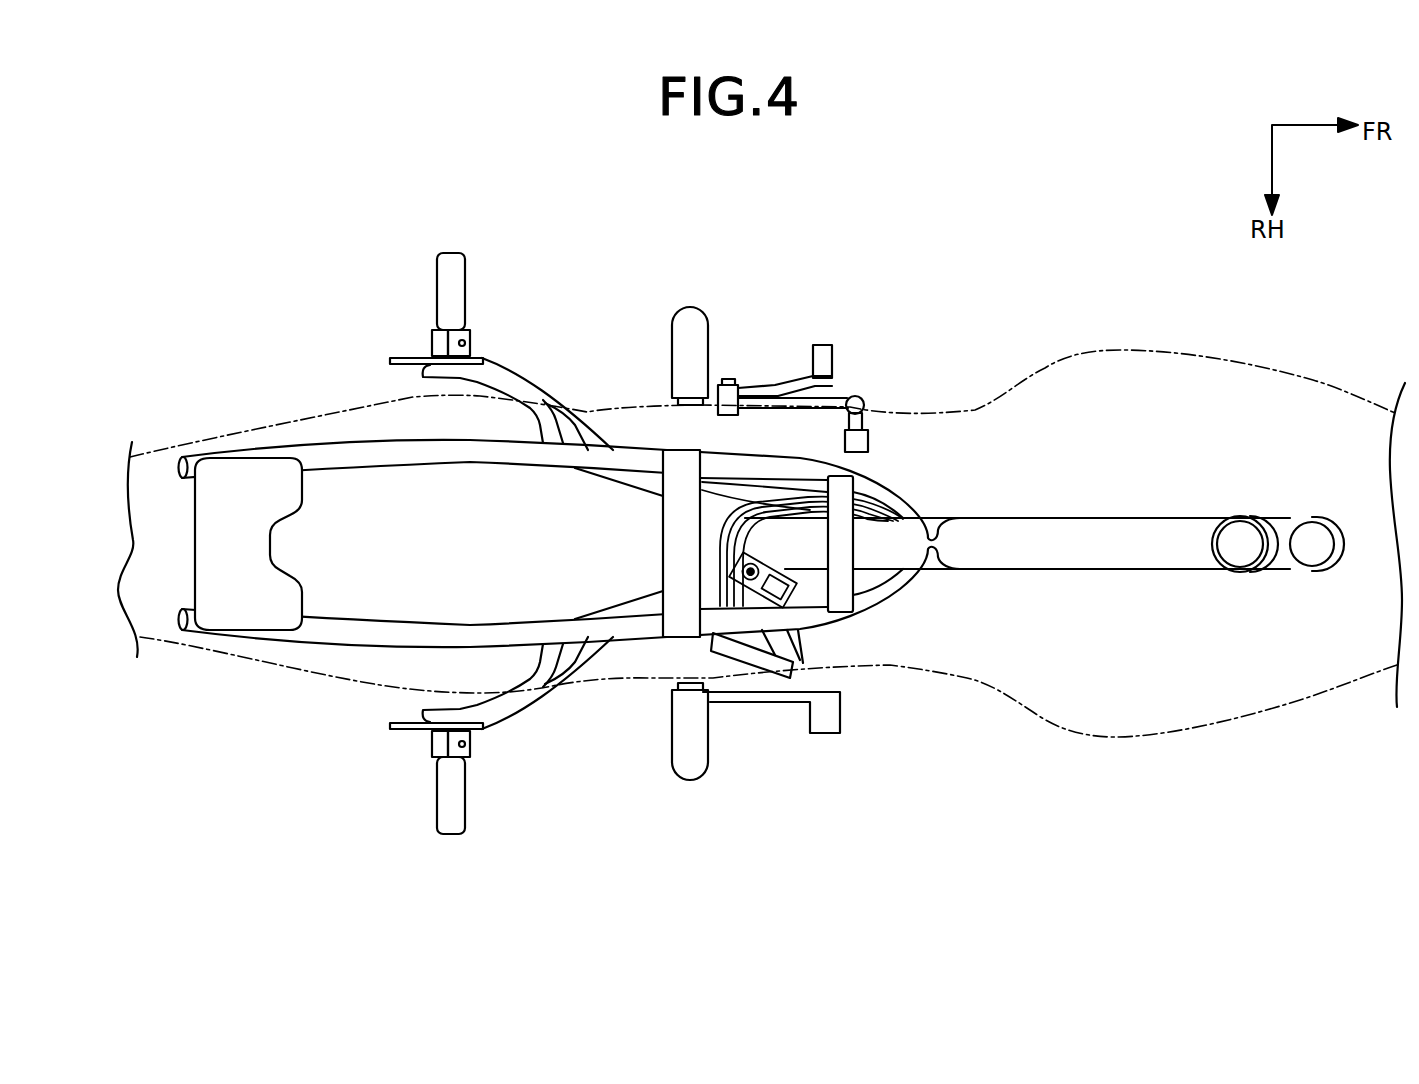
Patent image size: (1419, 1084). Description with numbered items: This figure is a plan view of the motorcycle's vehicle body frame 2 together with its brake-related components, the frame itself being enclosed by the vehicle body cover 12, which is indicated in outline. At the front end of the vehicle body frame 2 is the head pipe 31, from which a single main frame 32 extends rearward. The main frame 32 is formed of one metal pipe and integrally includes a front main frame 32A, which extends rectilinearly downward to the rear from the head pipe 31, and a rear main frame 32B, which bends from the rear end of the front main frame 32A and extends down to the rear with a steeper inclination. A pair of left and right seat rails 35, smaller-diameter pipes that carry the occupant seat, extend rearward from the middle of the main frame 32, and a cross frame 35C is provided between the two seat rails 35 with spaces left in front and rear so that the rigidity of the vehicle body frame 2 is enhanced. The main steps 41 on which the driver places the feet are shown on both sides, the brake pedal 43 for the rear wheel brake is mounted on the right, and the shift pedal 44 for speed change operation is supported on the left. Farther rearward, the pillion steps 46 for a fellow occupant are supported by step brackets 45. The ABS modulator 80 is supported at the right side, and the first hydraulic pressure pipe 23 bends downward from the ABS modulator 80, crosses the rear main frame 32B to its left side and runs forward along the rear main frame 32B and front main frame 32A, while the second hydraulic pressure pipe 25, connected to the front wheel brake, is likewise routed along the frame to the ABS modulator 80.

The vehicle body frame 2 is at (527, 461).
The vehicle body cover 12 is at (1347, 392).
The first hydraulic pressure pipe 23 is at (722, 530).
The second hydraulic pressure pipe 25 is at (700, 582).
The head pipe 31 is at (1287, 530).
The main frame 32 is at (1097, 515).
The front main frame 32A is at (1177, 530).
The rear main frame 32B is at (883, 553).
The seat rails 35 is at (340, 455).
The cross frame 35C is at (243, 472).
The main steps 41 is at (687, 305).
The brake pedal 43 is at (820, 715).
The shift pedal 44 is at (822, 348).
The step brackets 45 is at (503, 363).
The pillion steps 46 is at (442, 252).
The ABS modulator 80 is at (810, 643).